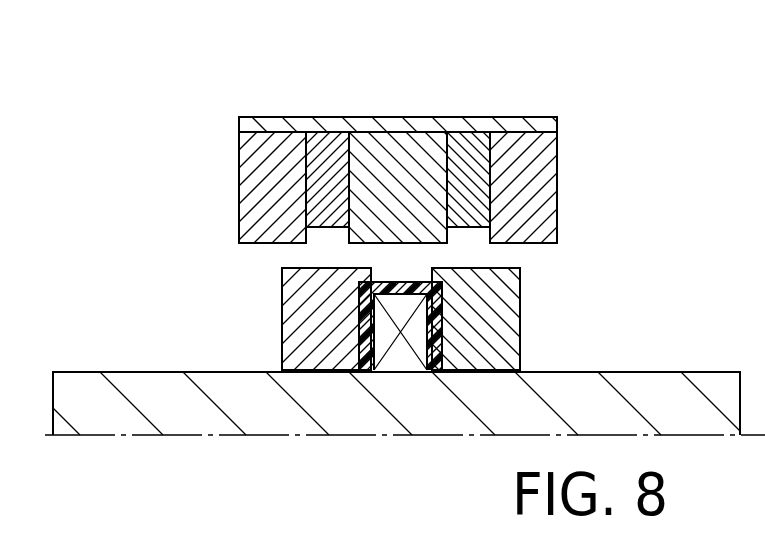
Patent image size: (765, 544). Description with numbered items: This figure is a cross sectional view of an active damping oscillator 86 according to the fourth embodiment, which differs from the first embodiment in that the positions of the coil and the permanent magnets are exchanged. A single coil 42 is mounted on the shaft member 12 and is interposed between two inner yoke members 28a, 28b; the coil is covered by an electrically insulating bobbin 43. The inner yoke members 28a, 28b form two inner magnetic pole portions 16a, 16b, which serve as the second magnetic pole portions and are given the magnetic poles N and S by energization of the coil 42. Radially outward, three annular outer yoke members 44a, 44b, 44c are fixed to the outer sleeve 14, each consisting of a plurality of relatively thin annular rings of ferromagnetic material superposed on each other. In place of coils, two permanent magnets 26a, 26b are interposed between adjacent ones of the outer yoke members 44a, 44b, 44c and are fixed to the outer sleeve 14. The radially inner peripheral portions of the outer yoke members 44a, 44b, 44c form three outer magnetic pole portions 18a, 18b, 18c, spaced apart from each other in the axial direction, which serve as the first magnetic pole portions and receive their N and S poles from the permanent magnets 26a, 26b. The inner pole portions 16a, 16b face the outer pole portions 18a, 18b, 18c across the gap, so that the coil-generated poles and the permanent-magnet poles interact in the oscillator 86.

The shaft member 12 is at (142, 383).
The outer sleeve 14 is at (265, 122).
The inner magnetic pole portion 16a is at (317, 273).
The inner magnetic pole portion 16b is at (485, 271).
The outer magnetic pole portion 18a is at (373, 233).
The outer magnetic pole portion 18b is at (255, 238).
The outer magnetic pole portion 18c is at (548, 241).
The permanent magnet 26a is at (328, 137).
The permanent magnet 26b is at (468, 137).
The inner yoke member 28a is at (268, 342).
The inner yoke member 28b is at (535, 347).
The coil 42 is at (400, 363).
The bobbin 43 is at (360, 335).
The outer yoke member 44a is at (403, 125).
The outer yoke member 44b is at (235, 177).
The outer yoke member 44c is at (531, 127).
The active damping oscillator 86 is at (157, 187).